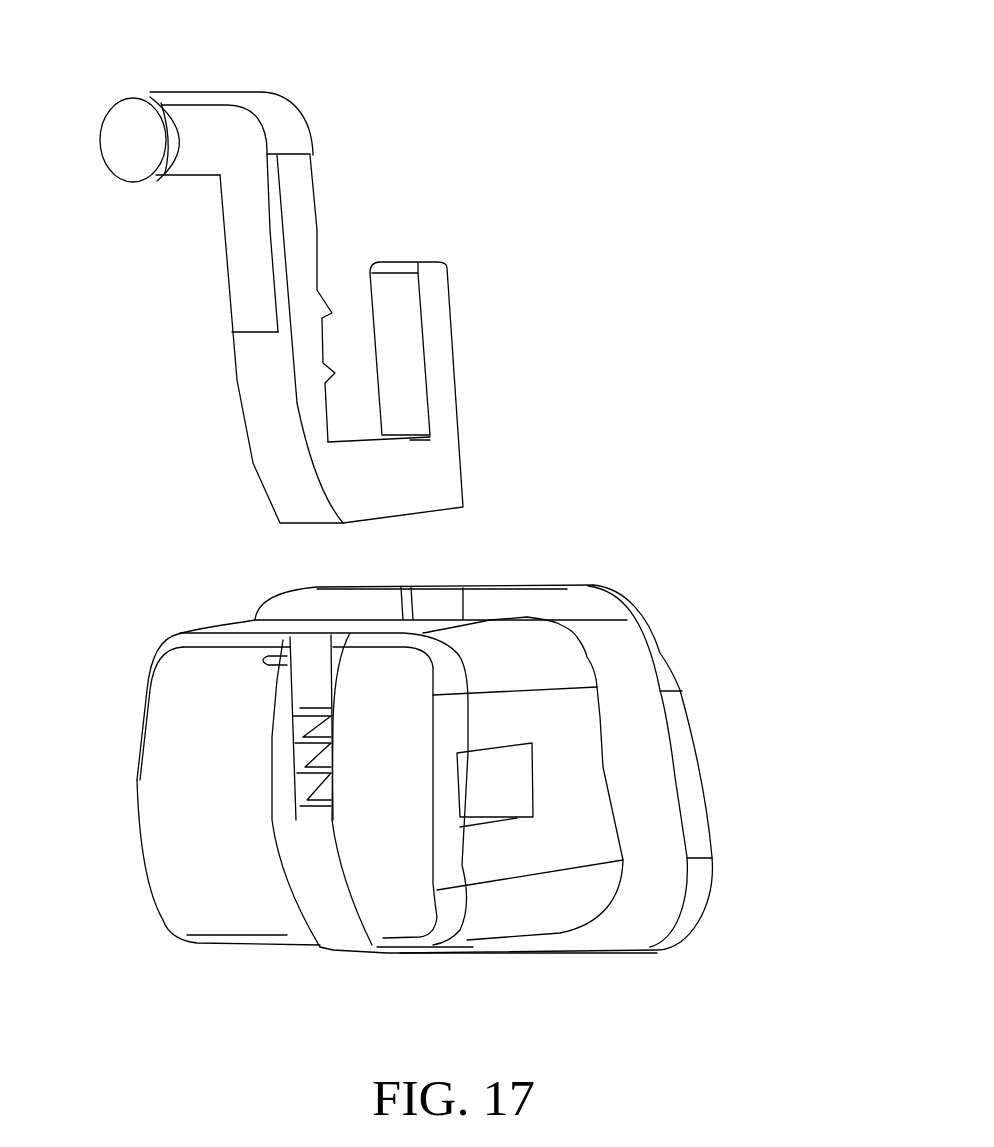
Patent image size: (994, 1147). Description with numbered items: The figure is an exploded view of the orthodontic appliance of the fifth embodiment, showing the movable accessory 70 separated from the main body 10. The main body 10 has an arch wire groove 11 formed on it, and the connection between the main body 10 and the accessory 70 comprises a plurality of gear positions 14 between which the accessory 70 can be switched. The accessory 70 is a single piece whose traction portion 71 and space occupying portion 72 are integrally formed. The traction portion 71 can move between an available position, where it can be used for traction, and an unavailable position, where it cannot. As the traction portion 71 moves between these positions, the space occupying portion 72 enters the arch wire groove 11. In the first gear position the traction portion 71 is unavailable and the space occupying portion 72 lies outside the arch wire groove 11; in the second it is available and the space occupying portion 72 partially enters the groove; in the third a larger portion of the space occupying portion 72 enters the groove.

The main body 10 is at (523, 673).
The arch wire groove 11 is at (490, 800).
The gear positions 14 is at (303, 780).
The accessory 70 is at (292, 283).
The traction portion 71 is at (235, 150).
The space occupying portion 72 is at (375, 467).